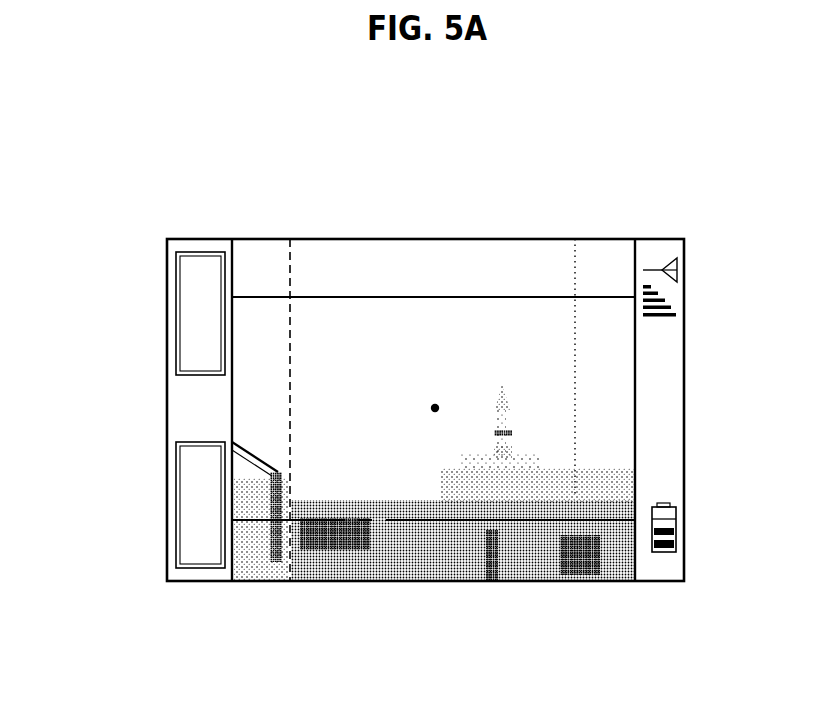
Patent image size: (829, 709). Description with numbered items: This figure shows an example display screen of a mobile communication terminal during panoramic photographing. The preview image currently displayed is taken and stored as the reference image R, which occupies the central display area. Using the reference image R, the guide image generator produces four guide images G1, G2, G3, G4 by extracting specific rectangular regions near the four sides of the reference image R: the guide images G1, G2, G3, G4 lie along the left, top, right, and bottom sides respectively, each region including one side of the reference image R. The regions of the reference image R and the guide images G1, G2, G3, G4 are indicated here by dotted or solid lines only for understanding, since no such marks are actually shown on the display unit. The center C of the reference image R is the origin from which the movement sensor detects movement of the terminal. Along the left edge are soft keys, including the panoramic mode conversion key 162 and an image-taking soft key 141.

The reference image R is at (703, 79).
The guide image G1 is at (153, 410).
The guide image G2 is at (433, 220).
The guide image G3 is at (715, 410).
The guide image G4 is at (433, 601).
The center of the reference image C is at (480, 410).
The image taking mode icon 141 is at (176, 314).
The panoramic mode conversion key 162 is at (176, 492).